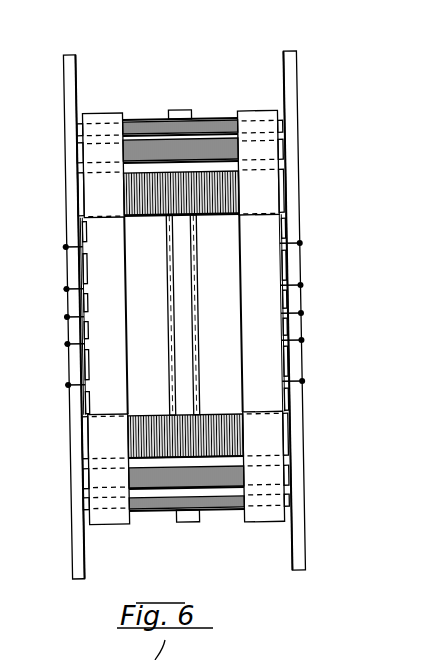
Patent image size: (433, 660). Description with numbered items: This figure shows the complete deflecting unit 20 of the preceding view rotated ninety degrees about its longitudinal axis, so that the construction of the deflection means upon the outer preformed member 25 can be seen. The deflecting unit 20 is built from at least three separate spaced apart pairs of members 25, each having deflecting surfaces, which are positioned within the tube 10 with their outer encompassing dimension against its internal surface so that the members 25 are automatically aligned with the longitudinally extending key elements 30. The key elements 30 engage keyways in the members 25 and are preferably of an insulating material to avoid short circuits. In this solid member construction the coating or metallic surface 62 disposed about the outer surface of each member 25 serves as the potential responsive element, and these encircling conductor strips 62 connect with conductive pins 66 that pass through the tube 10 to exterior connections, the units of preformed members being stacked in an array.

The tube 10 is at (298, 112).
The deflecting unit 20 is at (203, 578).
The preformed member 25 is at (227, 243).
The key element 30 is at (112, 112).
The metallic surface 62 is at (80, 192).
The conductive pin 66 is at (303, 245).